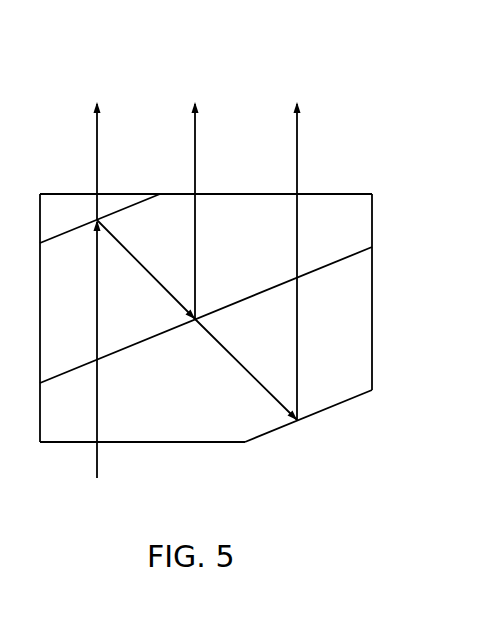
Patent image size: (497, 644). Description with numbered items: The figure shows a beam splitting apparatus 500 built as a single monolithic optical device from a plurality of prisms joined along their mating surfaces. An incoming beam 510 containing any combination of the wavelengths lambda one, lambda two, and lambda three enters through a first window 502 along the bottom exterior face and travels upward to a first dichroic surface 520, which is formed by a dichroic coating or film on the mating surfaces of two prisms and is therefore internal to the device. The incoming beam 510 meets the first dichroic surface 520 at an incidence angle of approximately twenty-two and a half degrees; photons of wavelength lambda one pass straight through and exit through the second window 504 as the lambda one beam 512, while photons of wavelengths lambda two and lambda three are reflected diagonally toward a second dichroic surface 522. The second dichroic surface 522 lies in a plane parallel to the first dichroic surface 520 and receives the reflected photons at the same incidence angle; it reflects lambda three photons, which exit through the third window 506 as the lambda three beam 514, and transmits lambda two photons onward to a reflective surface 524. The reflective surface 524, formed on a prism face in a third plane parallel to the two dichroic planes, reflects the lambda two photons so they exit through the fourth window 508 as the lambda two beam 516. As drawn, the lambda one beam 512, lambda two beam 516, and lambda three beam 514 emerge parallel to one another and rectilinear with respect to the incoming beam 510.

The beam splitting apparatus 500 is at (376, 330).
The first window 502 is at (173, 443).
The second window 504 is at (65, 192).
The third window 506 is at (227, 192).
The fourth window 508 is at (344, 192).
The incoming beam 510 is at (96, 458).
The λ1 beam 512 is at (99, 131).
The λ3 beam 514 is at (197, 131).
The λ2 beam 516 is at (299, 131).
The first dichroic surface 520 is at (62, 236).
The second dichroic surface 522 is at (250, 296).
The reflective surface 524 is at (345, 401).